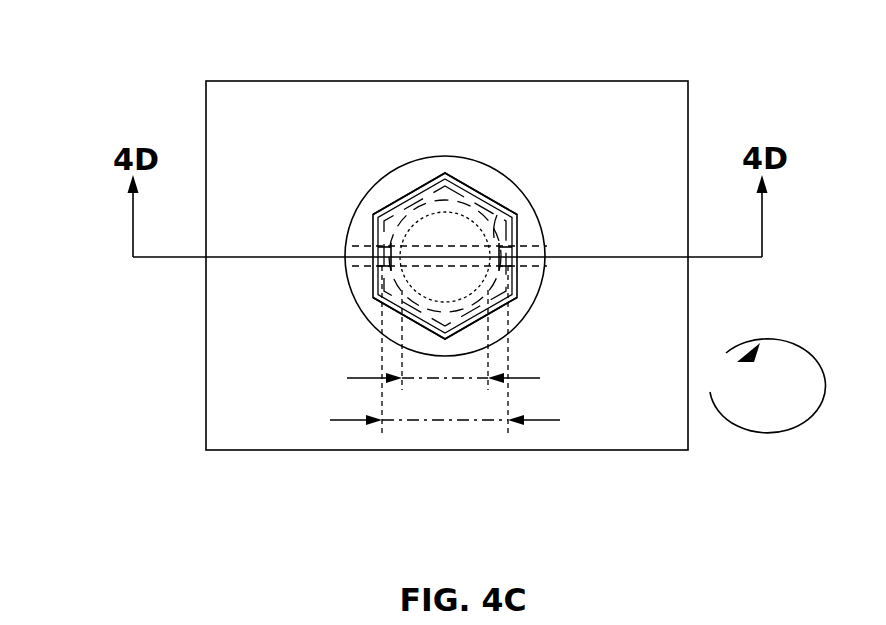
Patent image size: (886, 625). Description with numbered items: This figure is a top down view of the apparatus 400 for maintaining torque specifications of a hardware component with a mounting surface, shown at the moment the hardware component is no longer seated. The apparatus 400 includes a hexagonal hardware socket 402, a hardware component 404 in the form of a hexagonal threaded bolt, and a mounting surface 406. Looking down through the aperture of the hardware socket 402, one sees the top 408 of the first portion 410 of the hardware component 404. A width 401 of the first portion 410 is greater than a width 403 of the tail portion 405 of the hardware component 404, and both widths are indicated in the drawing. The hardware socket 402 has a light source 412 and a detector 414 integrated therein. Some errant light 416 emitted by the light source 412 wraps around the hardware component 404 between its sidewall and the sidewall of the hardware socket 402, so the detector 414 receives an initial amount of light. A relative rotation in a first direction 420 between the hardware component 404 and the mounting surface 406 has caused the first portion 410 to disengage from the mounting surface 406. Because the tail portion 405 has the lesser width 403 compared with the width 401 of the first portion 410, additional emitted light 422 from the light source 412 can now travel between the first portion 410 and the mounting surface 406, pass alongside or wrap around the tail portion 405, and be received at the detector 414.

The apparatus 400 is at (134, 72).
The width of the first portion 401 is at (463, 420).
The hardware socket 402 is at (381, 172).
The width of the tail portion 403 is at (440, 378).
The hardware component 404 is at (423, 192).
The tail portion 405 is at (508, 210).
The mounting surface 406 is at (615, 80).
The top 408 is at (463, 200).
The first portion 410 is at (494, 236).
The light source 412 is at (374, 262).
The detector 414 is at (530, 244).
The errant light 416 is at (401, 222).
The first direction 420 is at (800, 353).
The emitted light 422 is at (372, 211).